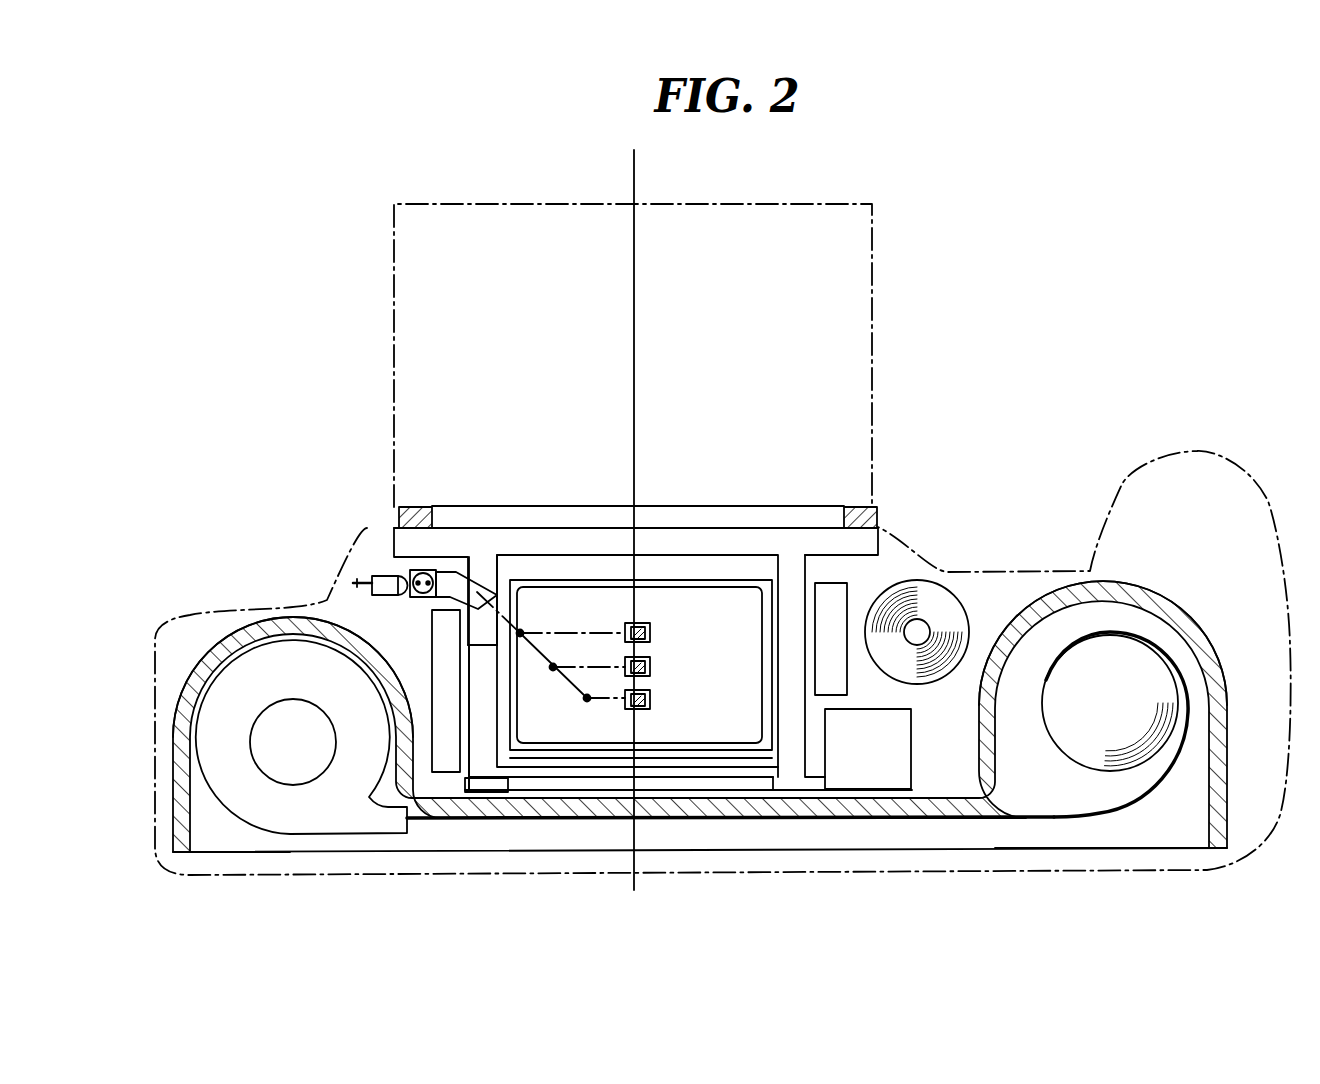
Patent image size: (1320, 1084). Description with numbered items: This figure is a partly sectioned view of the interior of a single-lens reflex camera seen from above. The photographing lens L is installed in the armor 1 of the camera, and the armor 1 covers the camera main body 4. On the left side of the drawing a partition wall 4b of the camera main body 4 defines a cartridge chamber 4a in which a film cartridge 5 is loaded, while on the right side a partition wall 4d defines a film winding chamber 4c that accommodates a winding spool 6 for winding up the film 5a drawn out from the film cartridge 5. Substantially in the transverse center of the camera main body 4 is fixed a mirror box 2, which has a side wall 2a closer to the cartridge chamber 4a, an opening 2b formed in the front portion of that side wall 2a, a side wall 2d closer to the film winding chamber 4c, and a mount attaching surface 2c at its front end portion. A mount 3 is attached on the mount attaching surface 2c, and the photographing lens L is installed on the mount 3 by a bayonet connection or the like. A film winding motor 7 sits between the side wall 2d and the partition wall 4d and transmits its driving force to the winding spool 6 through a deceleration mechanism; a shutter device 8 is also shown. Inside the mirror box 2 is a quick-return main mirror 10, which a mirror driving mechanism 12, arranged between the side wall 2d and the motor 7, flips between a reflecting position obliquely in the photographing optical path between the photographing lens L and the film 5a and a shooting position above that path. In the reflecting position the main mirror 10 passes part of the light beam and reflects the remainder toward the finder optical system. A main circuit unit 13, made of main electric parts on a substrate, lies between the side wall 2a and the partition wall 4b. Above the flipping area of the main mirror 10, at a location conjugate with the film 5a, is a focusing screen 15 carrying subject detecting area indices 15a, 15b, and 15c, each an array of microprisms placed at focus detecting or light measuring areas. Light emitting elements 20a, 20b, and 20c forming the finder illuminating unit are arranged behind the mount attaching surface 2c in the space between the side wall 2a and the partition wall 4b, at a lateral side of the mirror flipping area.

The armor 1 is at (1232, 447).
The mirror box 2 is at (860, 542).
The side wall 2a is at (473, 750).
The opening 2b is at (483, 630).
The mount attaching surface 2c is at (687, 528).
The side wall 2d is at (808, 728).
The mount 3 is at (861, 503).
The camera main body 4 is at (917, 805).
The cartridge chamber 4a is at (225, 833).
The partition wall 4b is at (268, 630).
The film winding chamber 4c is at (1032, 790).
The partition wall 4d is at (1095, 587).
The film cartridge 5 is at (312, 810).
The film 5a is at (605, 824).
The winding spool 6 is at (1115, 732).
The film winding motor 7 is at (948, 600).
The shutter device 8 is at (495, 787).
The quick-return main mirror 10 is at (760, 560).
The mirror driving mechanism 12 is at (852, 597).
The main circuit unit 13 is at (445, 748).
The focusing screen 15 is at (590, 597).
The subject detecting area index 15a is at (650, 667).
The subject detecting area index 15b is at (650, 700).
The subject detecting area index 15c is at (650, 633).
The light emitting element 20a is at (387, 572).
The light emitting element 20b is at (423, 566).
The light emitting element 20c is at (478, 602).
The photographing lens L is at (876, 292).